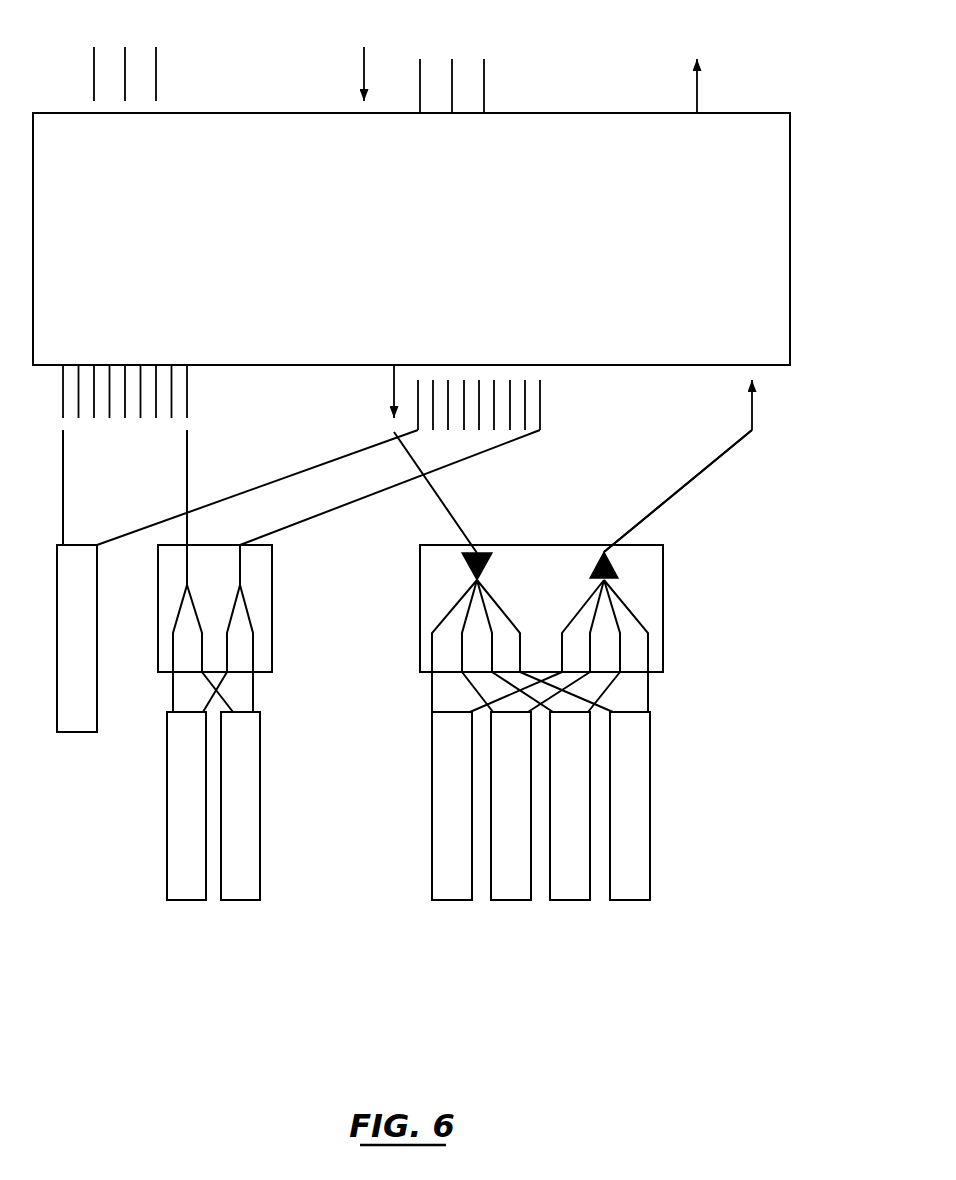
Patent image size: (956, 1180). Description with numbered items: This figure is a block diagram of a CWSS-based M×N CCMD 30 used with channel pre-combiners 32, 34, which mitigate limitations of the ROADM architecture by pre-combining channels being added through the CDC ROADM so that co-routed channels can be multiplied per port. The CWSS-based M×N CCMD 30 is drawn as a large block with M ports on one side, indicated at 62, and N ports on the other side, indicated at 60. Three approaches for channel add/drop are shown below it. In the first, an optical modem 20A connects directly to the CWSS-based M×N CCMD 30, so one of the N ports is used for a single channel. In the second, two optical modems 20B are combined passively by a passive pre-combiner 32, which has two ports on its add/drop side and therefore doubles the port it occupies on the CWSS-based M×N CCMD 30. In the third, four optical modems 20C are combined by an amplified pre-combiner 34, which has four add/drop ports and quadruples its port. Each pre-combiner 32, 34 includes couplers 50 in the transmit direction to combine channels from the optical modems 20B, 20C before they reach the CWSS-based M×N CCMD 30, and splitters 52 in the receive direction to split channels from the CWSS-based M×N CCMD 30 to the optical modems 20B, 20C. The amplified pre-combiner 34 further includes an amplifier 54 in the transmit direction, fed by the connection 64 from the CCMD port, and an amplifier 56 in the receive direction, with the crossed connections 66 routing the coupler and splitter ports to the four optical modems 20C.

The CWSS-based M×N CCMD 30 is at (791, 165).
The upper input/output ports 62 is at (736, 66).
The lower input/output ports 60 is at (796, 396).
The optical modem 20A is at (55, 722).
The optical modems 20B is at (167, 880).
The optical modems 20C is at (432, 880).
The passive pre-combiner 32 is at (272, 588).
The amplified pre-combiner 34 is at (664, 580).
The coupler 50 is at (253, 648).
The splitter 52 is at (173, 648).
The amplifier 54 is at (600, 568).
The amplifier 56 is at (468, 548).
The connection to combiner 64 is at (632, 535).
The crossed connections 66 is at (664, 706).